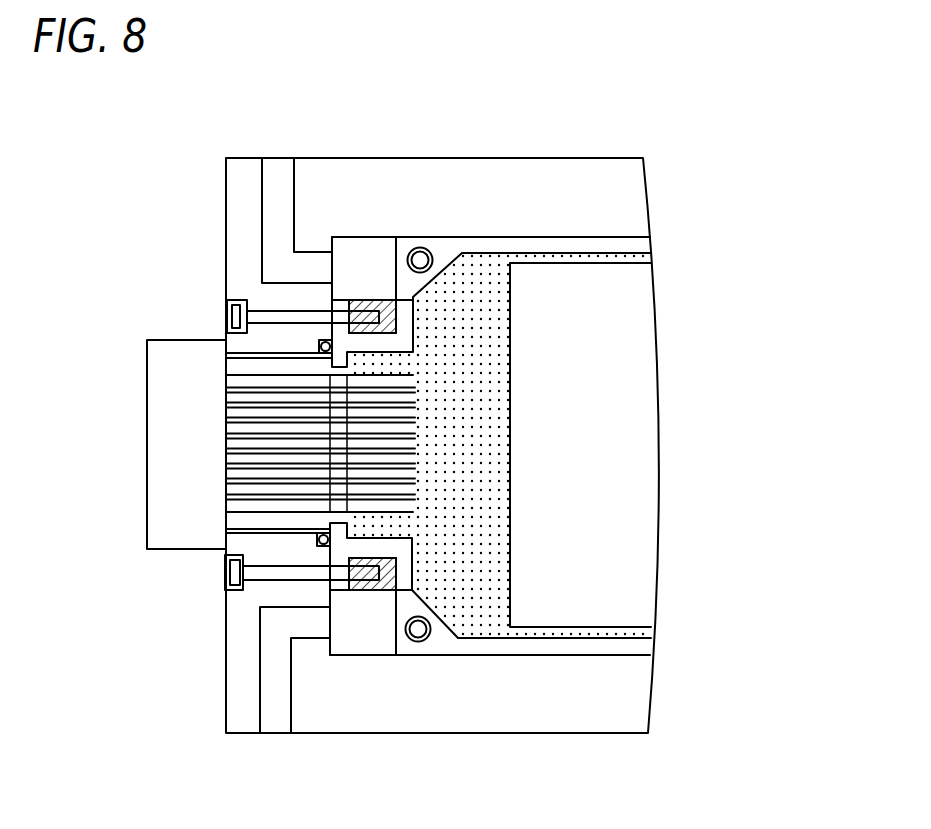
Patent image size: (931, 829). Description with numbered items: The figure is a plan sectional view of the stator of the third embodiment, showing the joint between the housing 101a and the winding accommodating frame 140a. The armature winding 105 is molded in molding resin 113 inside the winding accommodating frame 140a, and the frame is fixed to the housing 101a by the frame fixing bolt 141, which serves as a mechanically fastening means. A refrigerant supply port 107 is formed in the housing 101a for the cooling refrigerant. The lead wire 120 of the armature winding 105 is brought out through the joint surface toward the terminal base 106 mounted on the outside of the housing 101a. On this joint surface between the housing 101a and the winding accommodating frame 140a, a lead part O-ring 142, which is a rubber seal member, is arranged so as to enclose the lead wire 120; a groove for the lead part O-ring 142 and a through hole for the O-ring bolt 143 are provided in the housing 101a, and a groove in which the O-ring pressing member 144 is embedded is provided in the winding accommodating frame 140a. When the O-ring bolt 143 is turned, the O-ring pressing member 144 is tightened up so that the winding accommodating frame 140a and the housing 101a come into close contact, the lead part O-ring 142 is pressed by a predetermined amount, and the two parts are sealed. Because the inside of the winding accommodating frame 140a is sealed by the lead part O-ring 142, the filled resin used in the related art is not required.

The housing 101a is at (558, 183).
The armature winding 105 is at (598, 403).
The terminal base 106 is at (165, 432).
The refrigerant supply port 107 is at (263, 165).
The molding resin 113 is at (473, 290).
The lead wire 120 is at (265, 503).
The winding accommodating frame 140a is at (447, 243).
The frame fixing bolt 141 is at (422, 258).
The lead part O-ring 142 is at (320, 347).
The O-ring bolt 143 is at (227, 318).
The O-ring pressing member 144 is at (363, 298).